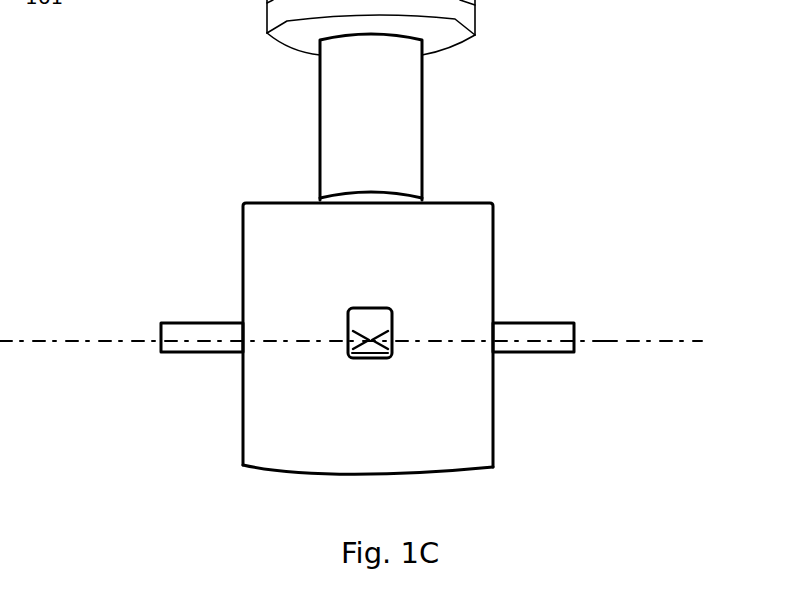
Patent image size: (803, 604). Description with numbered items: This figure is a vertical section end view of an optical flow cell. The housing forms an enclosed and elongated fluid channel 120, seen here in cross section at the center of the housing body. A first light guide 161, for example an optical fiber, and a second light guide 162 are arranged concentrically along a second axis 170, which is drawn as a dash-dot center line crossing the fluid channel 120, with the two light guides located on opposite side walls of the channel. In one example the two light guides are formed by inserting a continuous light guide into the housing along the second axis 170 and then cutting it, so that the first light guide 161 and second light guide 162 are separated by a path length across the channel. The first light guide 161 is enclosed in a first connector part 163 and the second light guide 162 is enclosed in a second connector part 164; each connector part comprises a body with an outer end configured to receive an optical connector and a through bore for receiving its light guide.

The fluid channel 120 is at (360, 322).
The first light guide 161 is at (347, 341).
The second light guide 162 is at (393, 341).
The first connector part 163 is at (184, 311).
The second connector part 164 is at (562, 320).
The second axis 170 is at (592, 340).